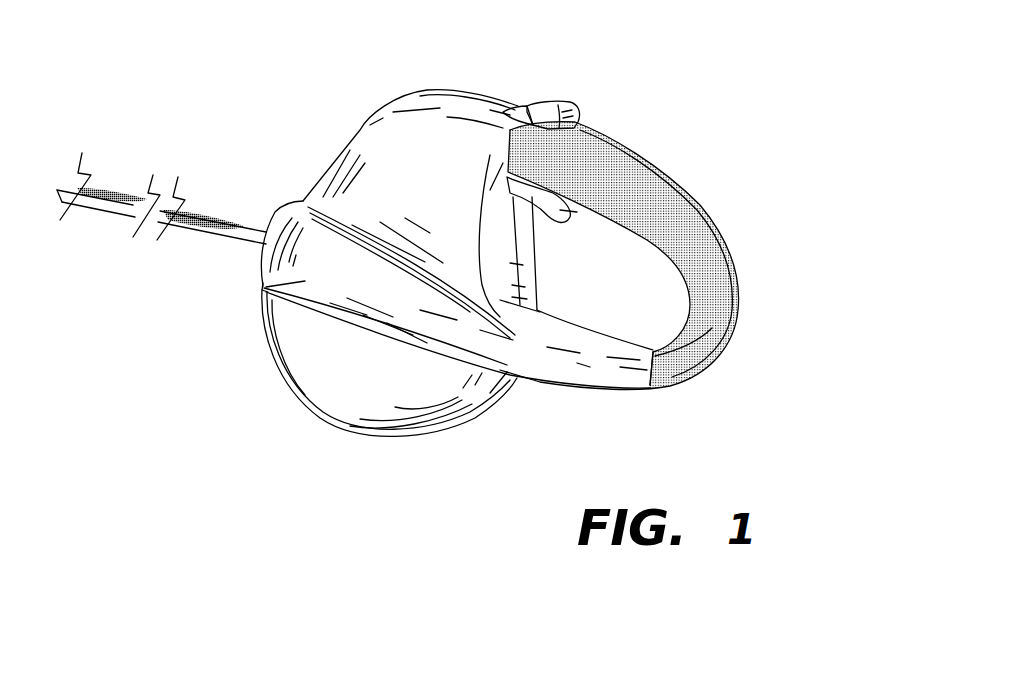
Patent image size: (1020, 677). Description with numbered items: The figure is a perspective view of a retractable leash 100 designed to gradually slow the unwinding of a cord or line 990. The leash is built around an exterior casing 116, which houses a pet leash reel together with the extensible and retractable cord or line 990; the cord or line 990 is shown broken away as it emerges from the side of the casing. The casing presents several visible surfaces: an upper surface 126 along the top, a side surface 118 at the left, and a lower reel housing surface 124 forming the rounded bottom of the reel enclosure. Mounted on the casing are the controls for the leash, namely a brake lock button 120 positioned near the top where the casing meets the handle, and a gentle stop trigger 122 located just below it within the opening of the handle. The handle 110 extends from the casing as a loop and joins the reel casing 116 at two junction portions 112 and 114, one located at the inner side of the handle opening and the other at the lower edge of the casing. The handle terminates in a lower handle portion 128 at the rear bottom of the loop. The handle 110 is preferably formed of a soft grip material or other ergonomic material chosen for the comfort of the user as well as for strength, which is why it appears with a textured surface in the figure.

The retractable leash 100 is at (758, 74).
The handle 110 is at (727, 230).
The junction portion 112 is at (547, 304).
The junction portion 114 is at (513, 377).
The casing 116 is at (389, 147).
The side surface 118 is at (263, 286).
The brake lock button 120 is at (580, 100).
The gentle stop trigger 122 is at (578, 230).
The lower reel housing surface 124 is at (345, 432).
The upper surface 126 is at (443, 92).
The lower handle portion 128 is at (720, 345).
The cord or line 990 is at (231, 218).